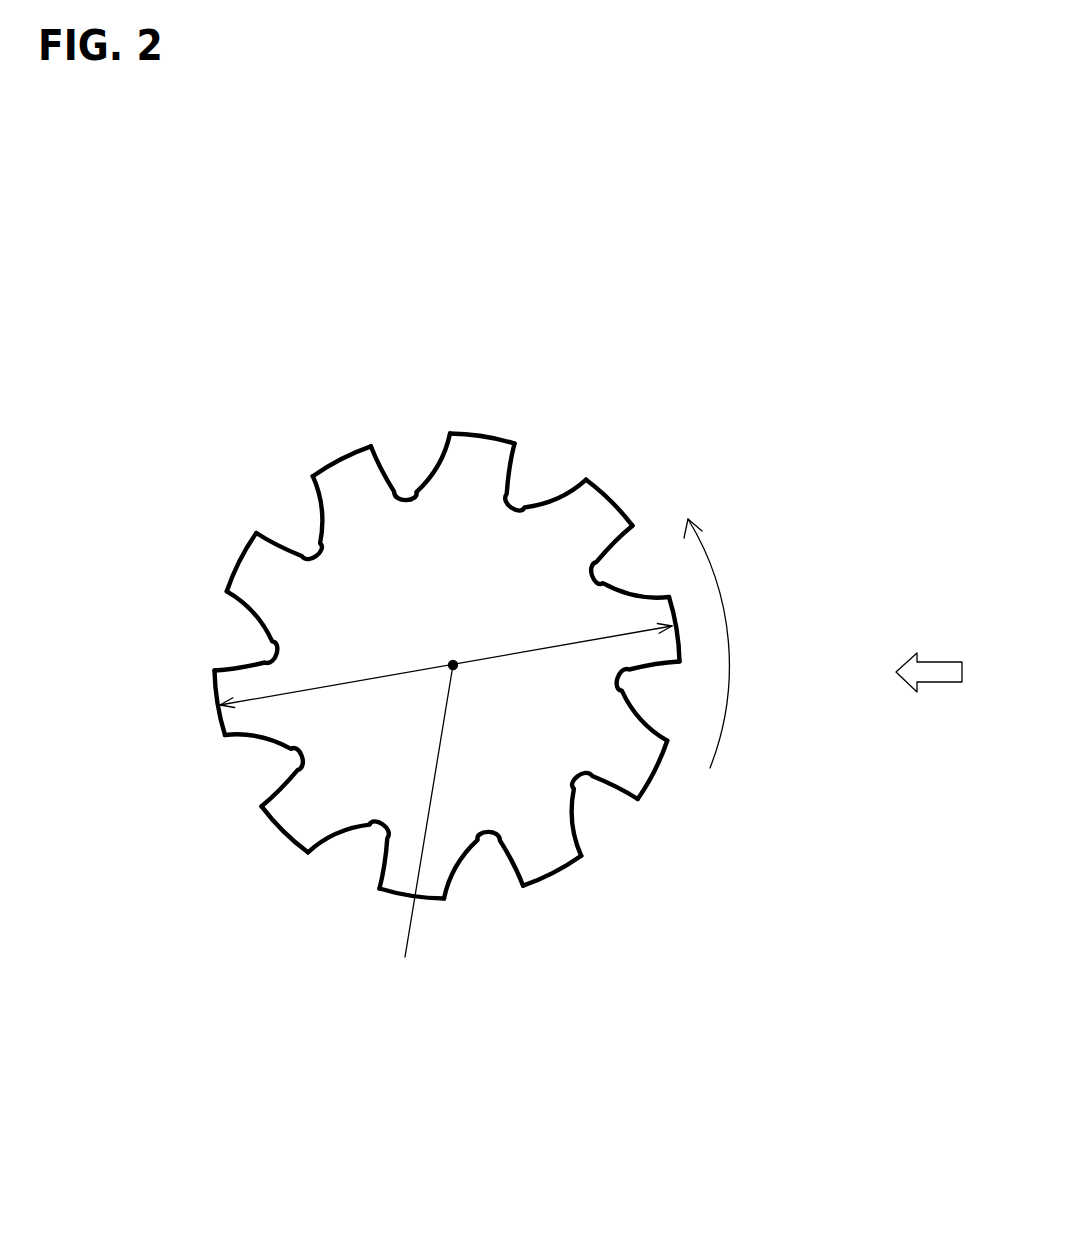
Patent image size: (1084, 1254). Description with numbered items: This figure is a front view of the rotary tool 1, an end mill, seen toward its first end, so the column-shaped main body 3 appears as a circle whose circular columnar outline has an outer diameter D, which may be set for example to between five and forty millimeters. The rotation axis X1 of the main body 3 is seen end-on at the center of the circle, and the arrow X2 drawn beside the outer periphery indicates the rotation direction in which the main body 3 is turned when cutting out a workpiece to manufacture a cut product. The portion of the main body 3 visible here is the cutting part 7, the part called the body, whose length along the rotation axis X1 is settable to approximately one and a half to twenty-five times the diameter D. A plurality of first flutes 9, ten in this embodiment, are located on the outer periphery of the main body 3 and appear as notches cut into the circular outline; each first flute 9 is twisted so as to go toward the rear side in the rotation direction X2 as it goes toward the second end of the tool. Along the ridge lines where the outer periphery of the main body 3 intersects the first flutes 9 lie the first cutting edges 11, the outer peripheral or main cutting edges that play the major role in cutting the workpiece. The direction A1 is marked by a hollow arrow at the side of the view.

The rotary tool 1 is at (635, 333).
The main body 3 is at (489, 686).
The cutting part 7 is at (489, 686).
The first flute 9 is at (412, 455).
The first cutting edge 11 is at (313, 472).
The diameter D is at (347, 682).
The rotation axis X1 is at (419, 837).
The rotation direction X2 is at (702, 621).
The direction of view A1 is at (929, 649).